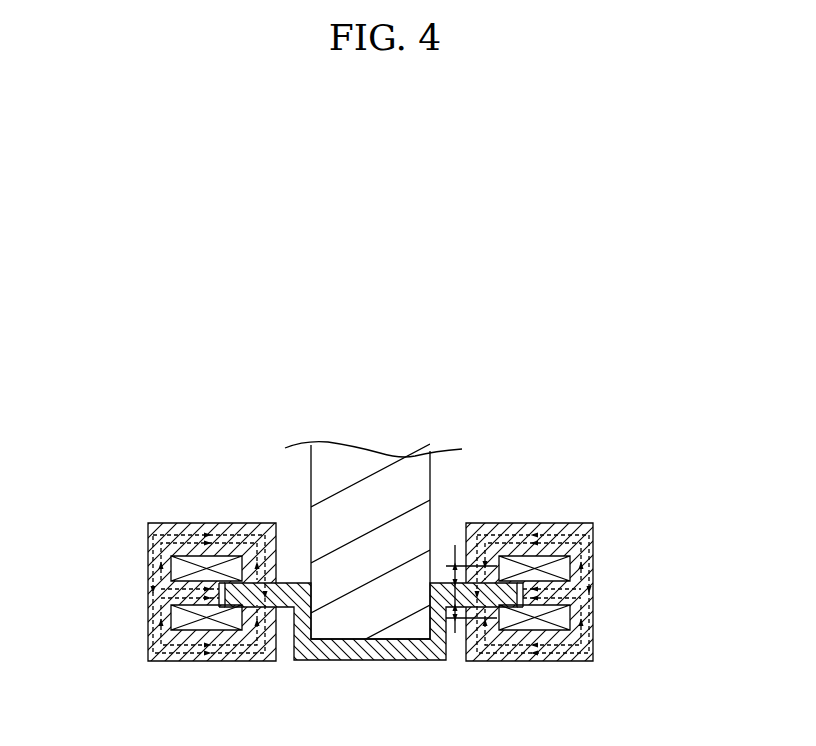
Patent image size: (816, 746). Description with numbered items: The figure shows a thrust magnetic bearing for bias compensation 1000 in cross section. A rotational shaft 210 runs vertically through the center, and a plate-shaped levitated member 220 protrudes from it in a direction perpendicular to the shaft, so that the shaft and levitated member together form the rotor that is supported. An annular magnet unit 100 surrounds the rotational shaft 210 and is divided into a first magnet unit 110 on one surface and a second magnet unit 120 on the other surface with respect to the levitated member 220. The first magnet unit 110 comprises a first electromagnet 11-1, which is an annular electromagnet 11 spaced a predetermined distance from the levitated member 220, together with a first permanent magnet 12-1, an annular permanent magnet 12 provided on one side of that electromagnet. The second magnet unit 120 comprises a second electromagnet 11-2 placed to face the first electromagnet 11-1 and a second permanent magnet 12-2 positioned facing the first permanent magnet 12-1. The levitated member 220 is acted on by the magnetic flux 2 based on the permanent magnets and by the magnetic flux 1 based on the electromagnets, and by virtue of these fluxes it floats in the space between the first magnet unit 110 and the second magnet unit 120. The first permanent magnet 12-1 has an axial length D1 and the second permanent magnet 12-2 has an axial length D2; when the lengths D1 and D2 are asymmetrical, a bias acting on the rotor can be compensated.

The thrust magnetic bearing for bias compensation 1000 is at (555, 414).
The magnetic flux based on electromagnet 1 is at (232, 661).
The magnetic flux based on permanent magnet 2 is at (160, 523).
The electromagnet 11 is at (65, 567).
The first electromagnet 11-1 is at (162, 566).
The second electromagnet 11-2 is at (162, 617).
The permanent magnet 12 is at (282, 452).
The first permanent magnet 12-1 is at (258, 532).
The second permanent magnet 12-2 is at (274, 532).
The magnet unit 100 is at (681, 530).
The first magnet unit 110 is at (592, 527).
The second magnet unit 120 is at (592, 657).
The rotational shaft 210 is at (368, 455).
The levitated member 220 is at (367, 652).
The length of first permanent magnet in axial direction D1 is at (455, 545).
The length of second permanent magnet in axial direction D2 is at (455, 633).